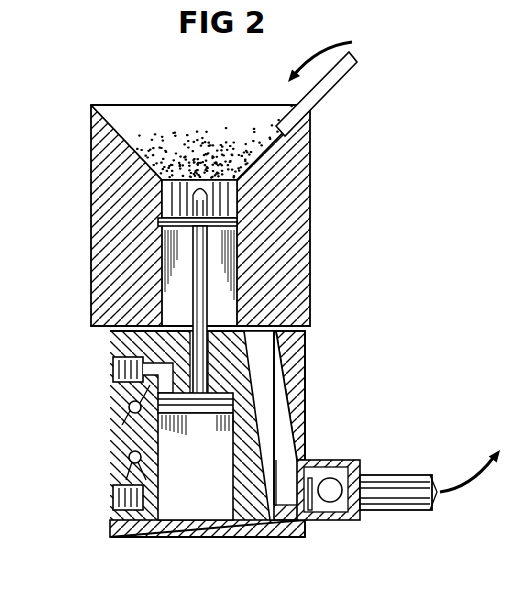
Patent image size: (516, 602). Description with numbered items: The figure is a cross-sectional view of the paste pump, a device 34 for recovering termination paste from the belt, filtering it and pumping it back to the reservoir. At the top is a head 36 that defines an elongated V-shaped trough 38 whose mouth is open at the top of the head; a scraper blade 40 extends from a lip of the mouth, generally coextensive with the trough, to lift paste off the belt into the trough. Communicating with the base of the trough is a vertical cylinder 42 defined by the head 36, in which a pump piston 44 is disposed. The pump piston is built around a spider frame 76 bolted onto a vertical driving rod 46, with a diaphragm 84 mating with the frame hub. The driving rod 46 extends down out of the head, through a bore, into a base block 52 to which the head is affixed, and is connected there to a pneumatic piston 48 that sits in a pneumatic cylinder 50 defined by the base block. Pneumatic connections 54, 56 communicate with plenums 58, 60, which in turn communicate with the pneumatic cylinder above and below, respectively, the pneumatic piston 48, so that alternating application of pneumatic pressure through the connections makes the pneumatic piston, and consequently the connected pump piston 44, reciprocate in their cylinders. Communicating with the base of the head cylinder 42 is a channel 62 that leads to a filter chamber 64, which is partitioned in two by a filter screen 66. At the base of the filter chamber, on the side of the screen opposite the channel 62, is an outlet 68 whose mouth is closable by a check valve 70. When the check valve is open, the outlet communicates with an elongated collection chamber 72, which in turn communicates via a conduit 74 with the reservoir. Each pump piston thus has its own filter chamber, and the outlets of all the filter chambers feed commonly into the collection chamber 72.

The paste recovery device 34 is at (322, 221).
The head 36 is at (310, 148).
The V-shaped trough 38 is at (122, 122).
The scraper blade 40 is at (340, 90).
The vertical cylinder 42 is at (237, 299).
The pump piston 44 is at (242, 203).
The driving rod 46 is at (200, 266).
The pneumatic piston 48 is at (175, 432).
The pneumatic cylinder 50 is at (160, 437).
The base block 52 is at (115, 343).
The pneumatic connection 54 is at (115, 370).
The pneumatic connection 56 is at (113, 494).
The plenum 58 is at (130, 406).
The plenum 60 is at (130, 458).
The channel 62 is at (262, 332).
The filter chamber 64 is at (285, 425).
The filter screen 66 is at (283, 392).
The outlet 68 is at (299, 522).
The check valve 70 is at (332, 462).
The collection chamber 72 is at (322, 520).
The conduit 74 is at (392, 512).
The spider frame 76 is at (177, 198).
The diaphragm 84 is at (163, 218).